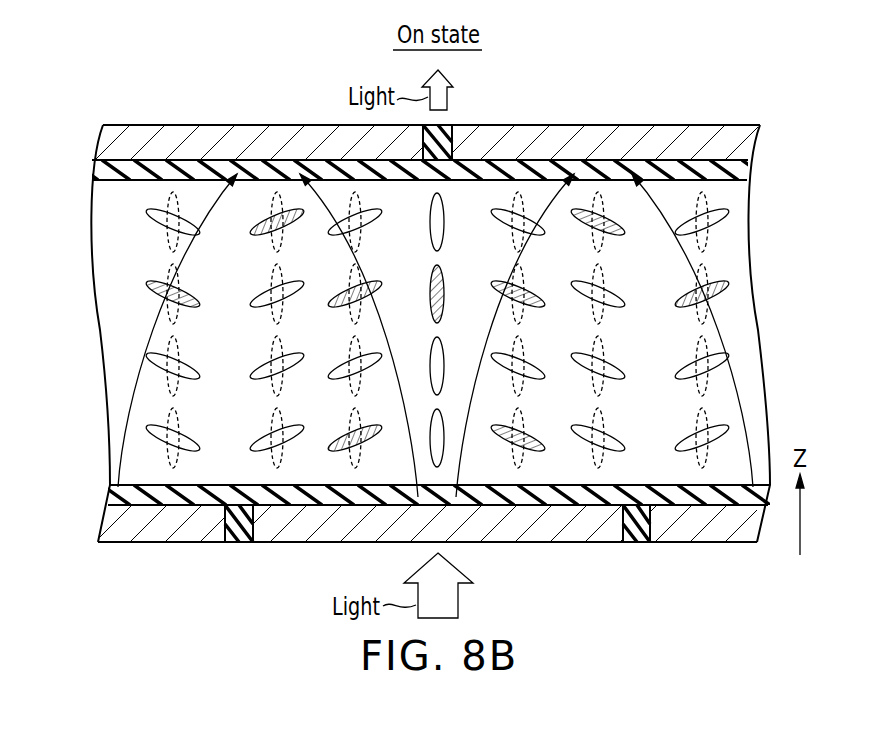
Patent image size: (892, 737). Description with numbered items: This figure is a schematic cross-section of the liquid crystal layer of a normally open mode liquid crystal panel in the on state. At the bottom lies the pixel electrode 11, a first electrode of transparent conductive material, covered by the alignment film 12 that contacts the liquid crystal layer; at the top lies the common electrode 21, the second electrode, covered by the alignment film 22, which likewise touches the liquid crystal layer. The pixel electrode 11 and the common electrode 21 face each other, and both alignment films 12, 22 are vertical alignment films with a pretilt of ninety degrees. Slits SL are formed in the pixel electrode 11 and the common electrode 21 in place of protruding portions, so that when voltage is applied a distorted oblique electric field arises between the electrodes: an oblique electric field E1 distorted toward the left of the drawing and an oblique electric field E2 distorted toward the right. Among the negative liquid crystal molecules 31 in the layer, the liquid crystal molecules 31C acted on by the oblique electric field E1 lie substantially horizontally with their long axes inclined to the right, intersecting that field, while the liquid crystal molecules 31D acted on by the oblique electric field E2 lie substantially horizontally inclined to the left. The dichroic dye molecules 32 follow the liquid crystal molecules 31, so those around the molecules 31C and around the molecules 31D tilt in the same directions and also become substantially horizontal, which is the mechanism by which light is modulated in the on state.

The pixel electrode 11 is at (112, 546).
The alignment film 12 is at (110, 497).
The common electrode 21 is at (327, 130).
The alignment film 22 is at (92, 172).
The liquid crystal molecules 31 is at (449, 259).
The liquid crystal molecules 31C is at (254, 222).
The liquid crystal molecules 31D is at (150, 213).
The dichroic dye molecules 32 is at (256, 290).
The slits SL is at (432, 148).
The oblique electric field E1 is at (413, 445).
The oblique electric field E2 is at (127, 462).